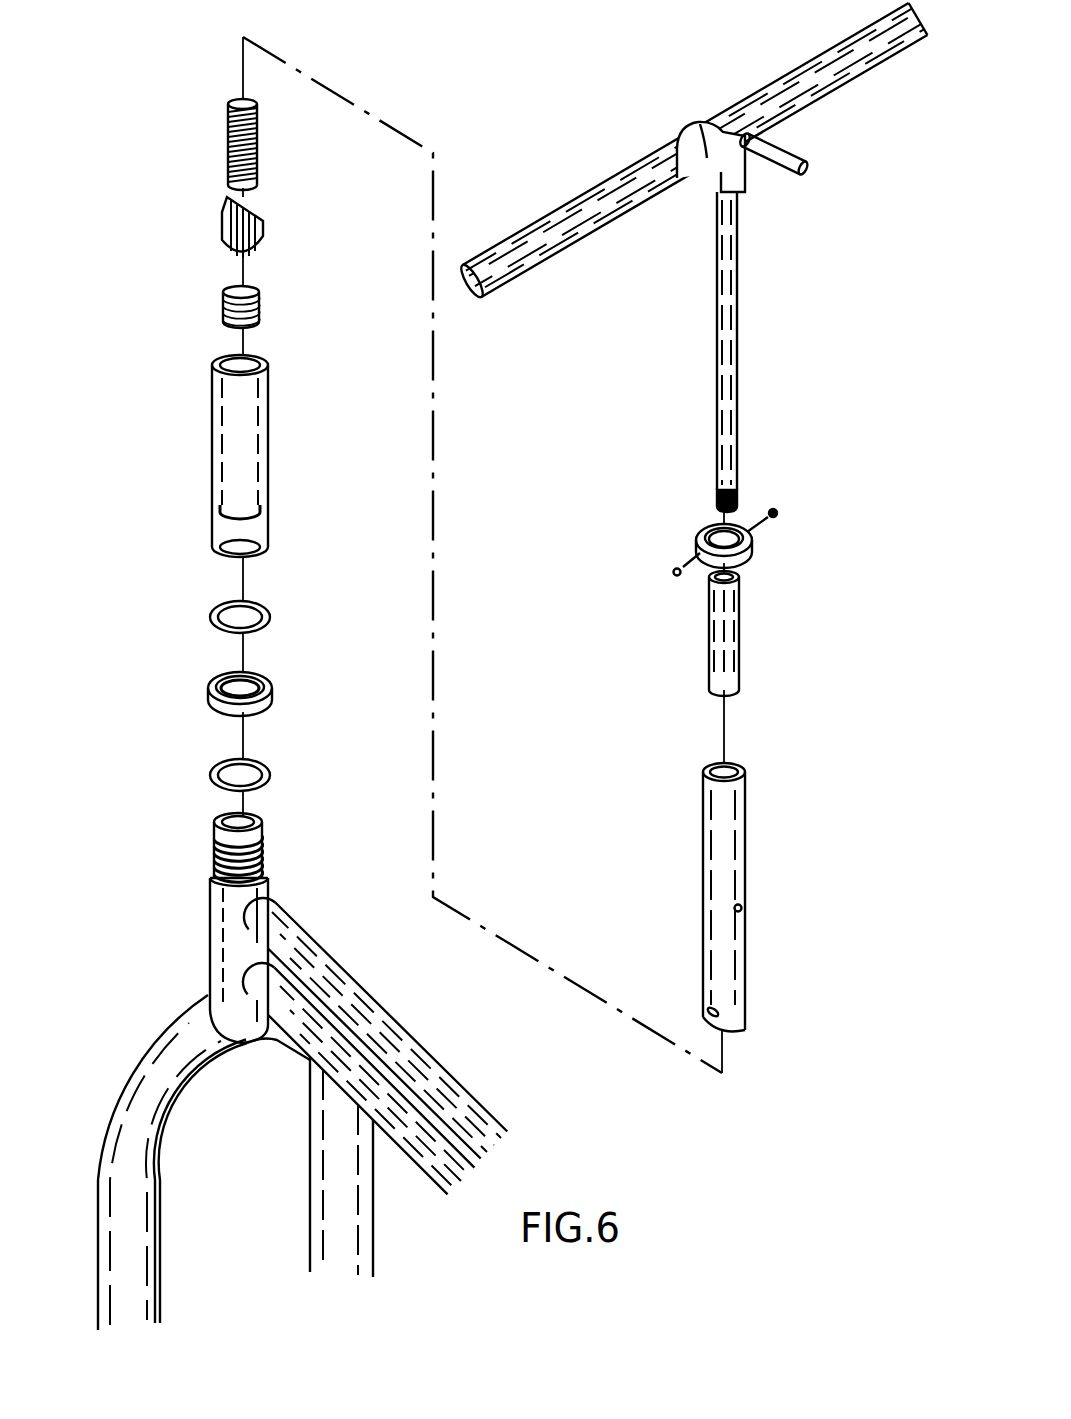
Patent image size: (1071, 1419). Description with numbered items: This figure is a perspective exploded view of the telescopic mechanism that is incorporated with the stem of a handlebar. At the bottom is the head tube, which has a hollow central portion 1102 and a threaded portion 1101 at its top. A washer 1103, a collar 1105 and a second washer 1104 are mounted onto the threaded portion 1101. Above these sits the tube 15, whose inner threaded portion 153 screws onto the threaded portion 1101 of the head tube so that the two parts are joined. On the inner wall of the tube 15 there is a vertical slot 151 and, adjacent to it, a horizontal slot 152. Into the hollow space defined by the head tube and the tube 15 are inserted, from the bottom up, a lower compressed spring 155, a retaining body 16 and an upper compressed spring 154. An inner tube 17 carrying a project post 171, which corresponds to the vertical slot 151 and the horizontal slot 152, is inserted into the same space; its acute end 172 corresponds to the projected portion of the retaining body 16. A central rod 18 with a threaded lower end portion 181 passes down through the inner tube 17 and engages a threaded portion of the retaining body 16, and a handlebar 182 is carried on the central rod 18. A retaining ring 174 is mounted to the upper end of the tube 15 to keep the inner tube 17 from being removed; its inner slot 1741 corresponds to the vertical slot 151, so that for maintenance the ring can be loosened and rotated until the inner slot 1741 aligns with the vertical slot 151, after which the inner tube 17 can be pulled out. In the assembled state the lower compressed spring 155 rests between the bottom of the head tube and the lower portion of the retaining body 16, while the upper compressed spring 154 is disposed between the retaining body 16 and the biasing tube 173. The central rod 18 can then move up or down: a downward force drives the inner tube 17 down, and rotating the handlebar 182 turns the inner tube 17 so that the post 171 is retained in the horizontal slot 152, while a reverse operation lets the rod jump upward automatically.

The upper compressed spring 154 is at (228, 145).
The retaining body 16 is at (237, 228).
The lower compressed spring 155 is at (227, 311).
The tube 15 is at (242, 474).
The vertical slot 151 is at (265, 426).
The horizontal slot 152 is at (213, 517).
The inner threaded portion 153 is at (270, 552).
The washer 1104 is at (213, 620).
The collar 1105 is at (208, 687).
The washer 1103 is at (265, 782).
The hollow central portion 1102 is at (225, 825).
The threaded portion 1101 is at (170, 926).
The central rod 18 is at (725, 361).
The threaded lower end portion 181 is at (717, 505).
The handlebar 182 is at (803, 155).
The retaining ring 174 is at (786, 555).
The inner slot 1741 is at (753, 537).
The biasing tube 173 is at (743, 637).
The inner tube 17 is at (721, 897).
The project post 171 is at (737, 908).
The acute end 172 is at (705, 1012).